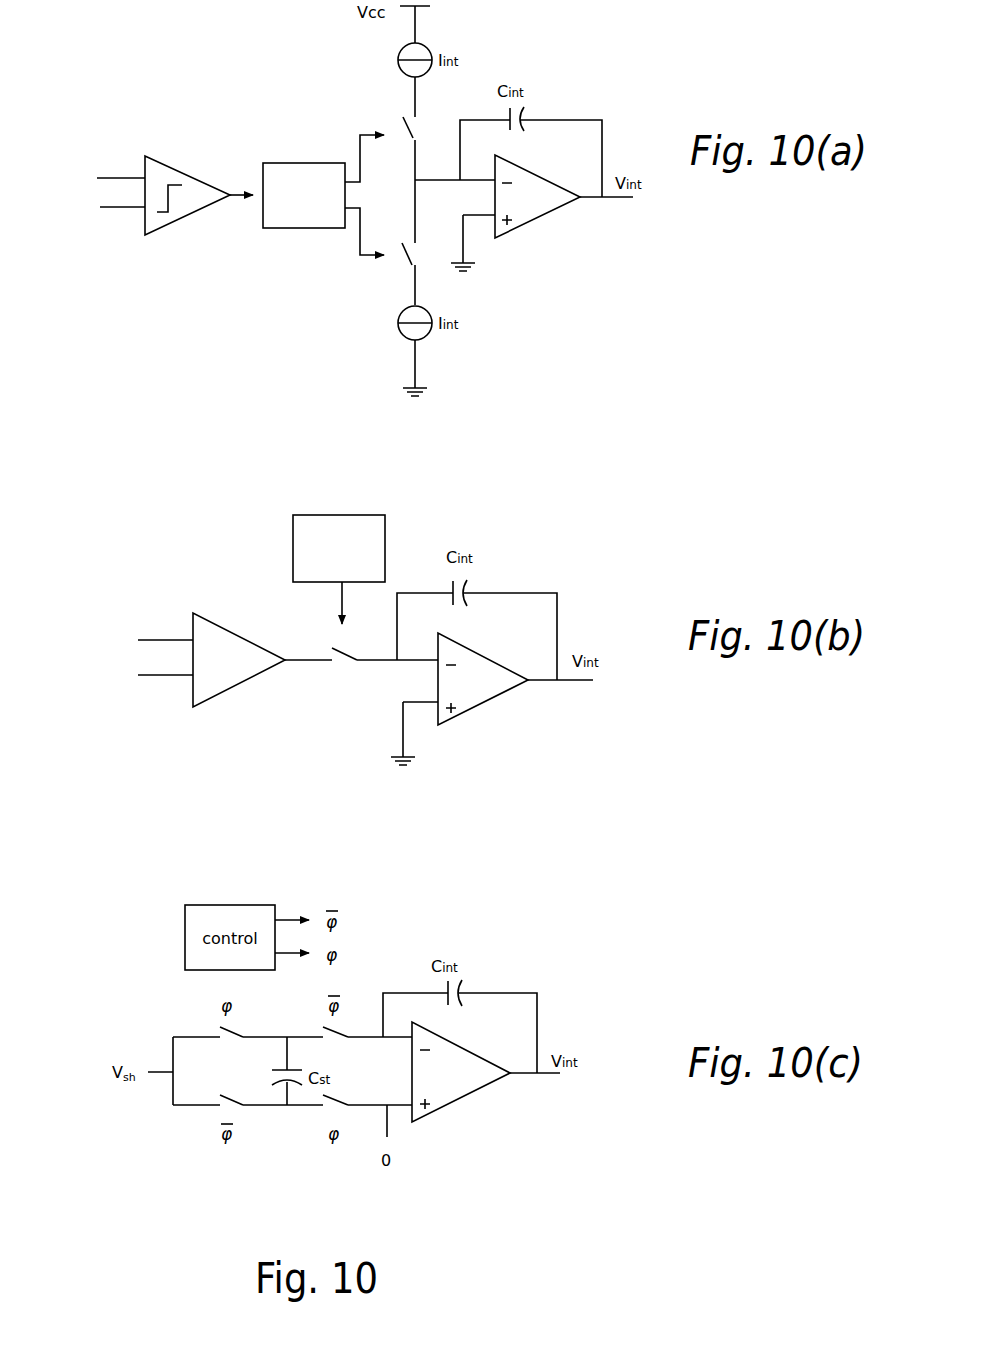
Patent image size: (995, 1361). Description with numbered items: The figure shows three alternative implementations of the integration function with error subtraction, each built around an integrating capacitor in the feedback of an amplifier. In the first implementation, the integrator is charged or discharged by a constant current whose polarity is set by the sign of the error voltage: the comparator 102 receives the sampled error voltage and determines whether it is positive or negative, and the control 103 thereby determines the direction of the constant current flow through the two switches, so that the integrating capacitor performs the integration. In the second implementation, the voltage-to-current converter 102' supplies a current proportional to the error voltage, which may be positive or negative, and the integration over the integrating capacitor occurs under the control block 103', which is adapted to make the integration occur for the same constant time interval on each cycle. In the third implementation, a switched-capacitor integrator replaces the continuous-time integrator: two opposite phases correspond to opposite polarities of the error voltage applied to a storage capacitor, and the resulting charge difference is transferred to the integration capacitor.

The comparator 102 is at (144, 155).
The control 103 is at (297, 152).
The voltage-to-current converter 102' is at (189, 574).
The control block 103' is at (319, 532).